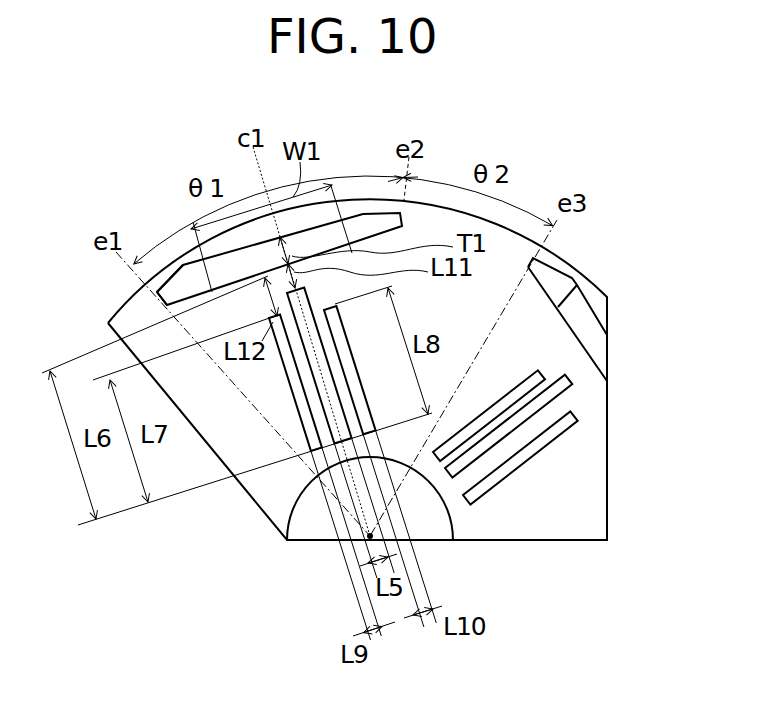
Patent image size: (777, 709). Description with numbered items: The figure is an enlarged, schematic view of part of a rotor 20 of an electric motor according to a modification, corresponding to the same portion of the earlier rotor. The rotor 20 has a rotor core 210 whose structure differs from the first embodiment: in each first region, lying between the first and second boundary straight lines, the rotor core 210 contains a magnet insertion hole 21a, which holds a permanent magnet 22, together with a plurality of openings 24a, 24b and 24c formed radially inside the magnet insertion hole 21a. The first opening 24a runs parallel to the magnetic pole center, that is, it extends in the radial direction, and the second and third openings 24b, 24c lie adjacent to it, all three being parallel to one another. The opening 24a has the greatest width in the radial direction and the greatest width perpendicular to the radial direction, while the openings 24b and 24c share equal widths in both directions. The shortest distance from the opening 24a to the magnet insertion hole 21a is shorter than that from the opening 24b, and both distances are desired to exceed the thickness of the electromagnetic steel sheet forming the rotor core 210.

The rotor 20 is at (118, 187).
The rotor core 210 is at (588, 470).
The permanent magnet 22 is at (333, 233).
The magnet insertion hole 21a is at (222, 276).
The opening 24a is at (313, 307).
The opening 24b is at (298, 408).
The opening 24c is at (359, 397).